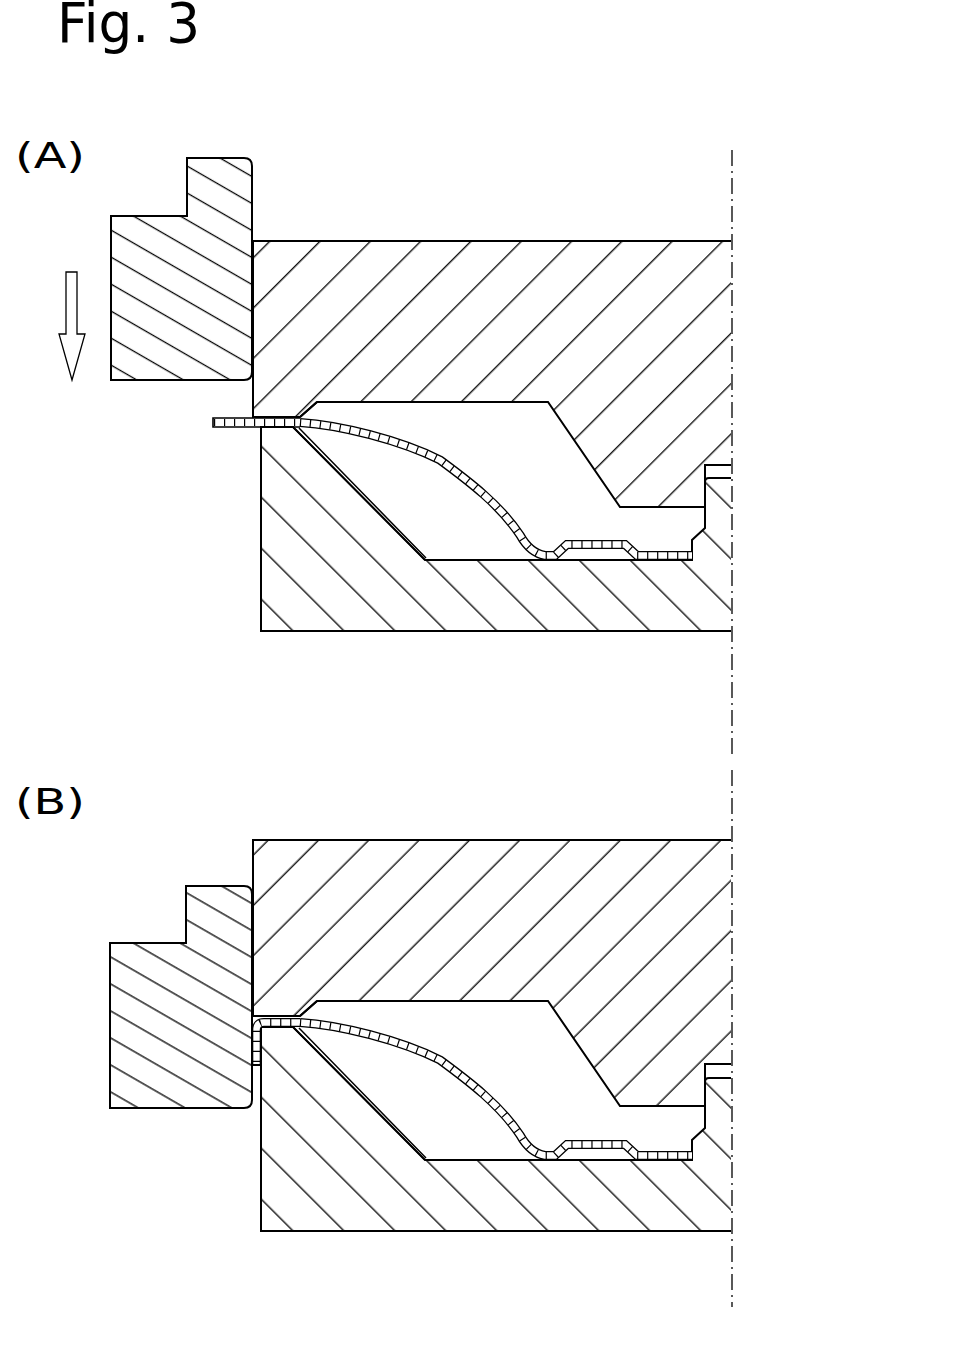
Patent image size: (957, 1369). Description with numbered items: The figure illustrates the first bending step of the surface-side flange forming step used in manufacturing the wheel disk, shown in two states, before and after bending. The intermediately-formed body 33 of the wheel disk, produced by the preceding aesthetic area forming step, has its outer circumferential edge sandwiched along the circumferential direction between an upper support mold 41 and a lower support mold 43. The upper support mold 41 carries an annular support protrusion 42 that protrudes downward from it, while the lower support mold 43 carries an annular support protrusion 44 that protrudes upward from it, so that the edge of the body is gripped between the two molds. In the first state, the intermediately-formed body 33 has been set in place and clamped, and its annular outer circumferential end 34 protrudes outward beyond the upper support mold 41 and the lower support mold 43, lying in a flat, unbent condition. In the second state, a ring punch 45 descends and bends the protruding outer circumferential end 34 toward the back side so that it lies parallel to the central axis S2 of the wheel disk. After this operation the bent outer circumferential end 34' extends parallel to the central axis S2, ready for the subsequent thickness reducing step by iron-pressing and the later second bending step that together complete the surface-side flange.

The intermediately-formed body 33 is at (452, 457).
The outer circumferential end 34 is at (204, 462).
The bent outer circumferential end 34' is at (206, 1114).
The upper support mold 41 is at (568, 272).
The annular support protrusion 42 is at (282, 407).
The lower support mold 43 is at (500, 612).
The annular support protrusion 44 is at (282, 440).
The ring punch 45 is at (242, 345).
The central axis S2 is at (733, 672).